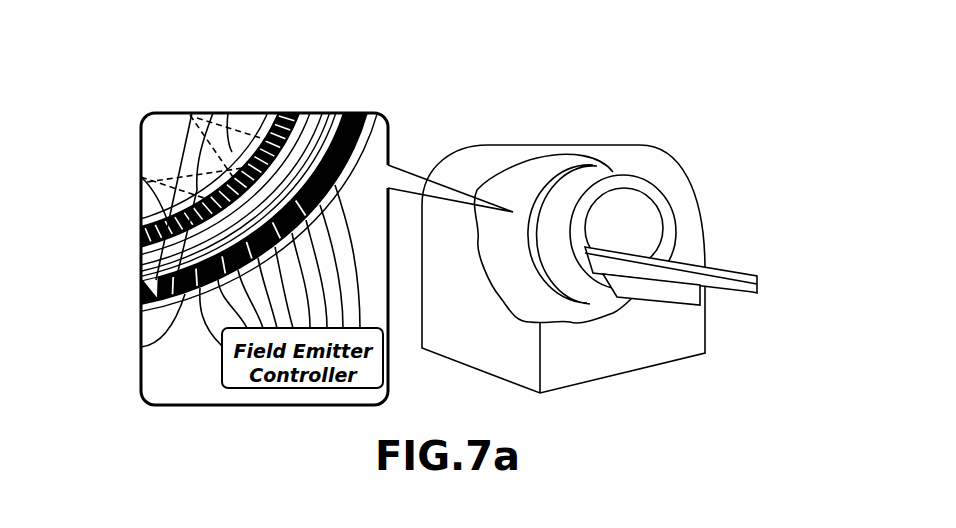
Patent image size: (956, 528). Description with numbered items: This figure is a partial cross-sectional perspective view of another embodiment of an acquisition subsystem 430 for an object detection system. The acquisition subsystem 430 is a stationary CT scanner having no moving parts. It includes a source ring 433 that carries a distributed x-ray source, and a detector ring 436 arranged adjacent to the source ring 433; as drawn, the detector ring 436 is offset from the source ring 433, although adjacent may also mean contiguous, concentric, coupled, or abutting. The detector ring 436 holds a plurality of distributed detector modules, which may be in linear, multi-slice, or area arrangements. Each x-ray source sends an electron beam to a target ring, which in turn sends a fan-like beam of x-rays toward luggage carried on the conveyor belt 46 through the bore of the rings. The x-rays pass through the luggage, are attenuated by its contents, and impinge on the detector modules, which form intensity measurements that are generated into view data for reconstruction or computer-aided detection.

The acquisition subsystem 430 is at (634, 242).
The source ring 433 is at (548, 186).
The detector ring 436 is at (693, 207).
The conveyor belt 46 is at (722, 283).